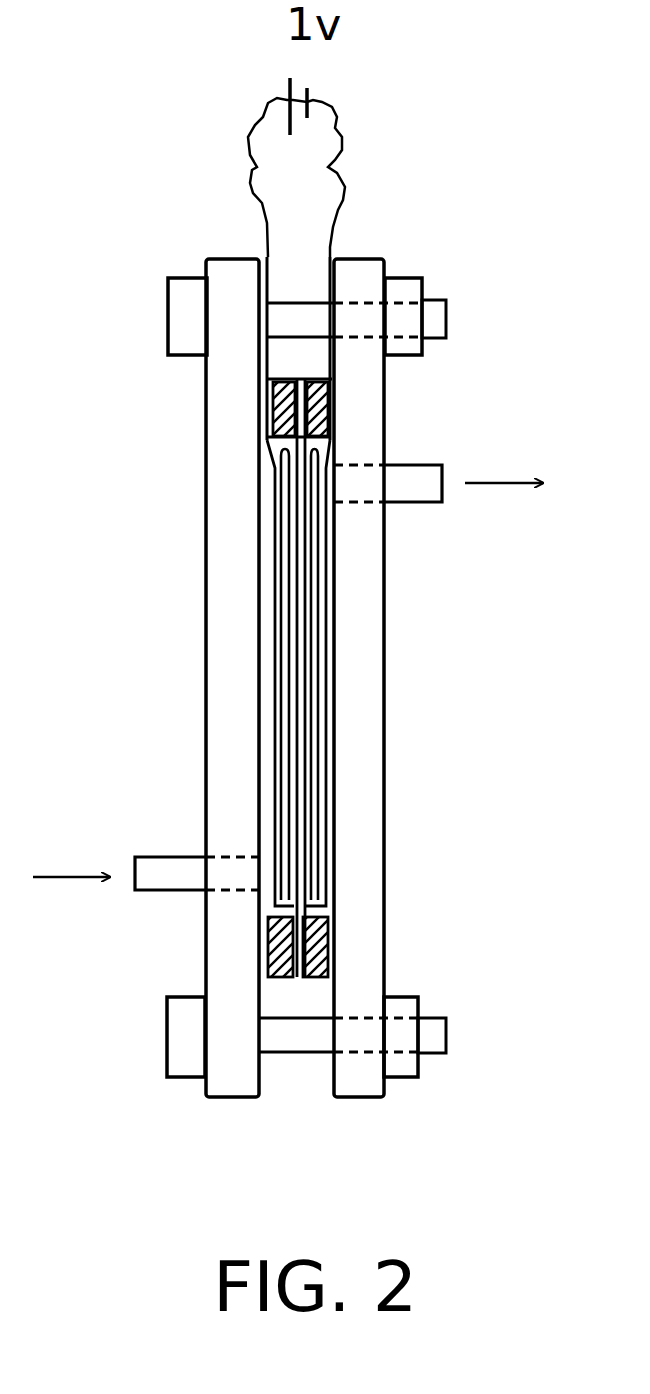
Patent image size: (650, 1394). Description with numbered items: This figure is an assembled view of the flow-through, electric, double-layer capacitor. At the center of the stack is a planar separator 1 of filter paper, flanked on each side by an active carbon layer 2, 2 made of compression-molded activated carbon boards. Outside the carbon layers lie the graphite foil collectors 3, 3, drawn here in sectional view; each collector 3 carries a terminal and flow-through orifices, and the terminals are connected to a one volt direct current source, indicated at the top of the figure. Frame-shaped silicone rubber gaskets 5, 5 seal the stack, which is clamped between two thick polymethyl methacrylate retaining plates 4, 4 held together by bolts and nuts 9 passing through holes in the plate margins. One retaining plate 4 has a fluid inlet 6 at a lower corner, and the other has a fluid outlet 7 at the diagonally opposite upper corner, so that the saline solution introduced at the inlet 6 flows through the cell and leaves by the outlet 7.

The planar separator 1 is at (305, 568).
The active carbon layer 2 is at (280, 570).
The collector 3 is at (289, 642).
The retaining plate 4 is at (227, 947).
The frame-shaped gasket 5 is at (337, 913).
The fluid inlet 6 is at (160, 870).
The fluid outlet 7 is at (413, 477).
The bolts and nuts 9 is at (182, 300).